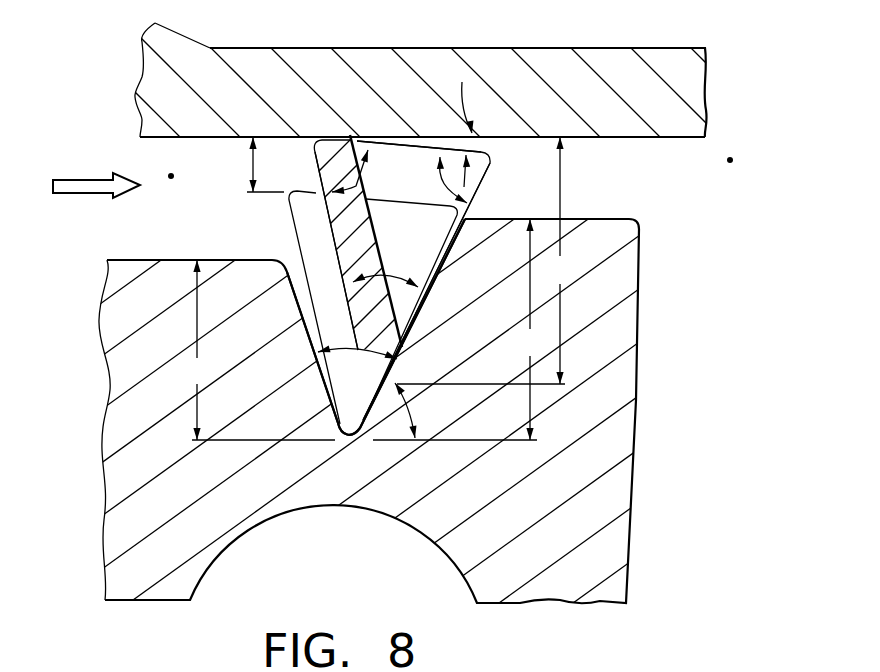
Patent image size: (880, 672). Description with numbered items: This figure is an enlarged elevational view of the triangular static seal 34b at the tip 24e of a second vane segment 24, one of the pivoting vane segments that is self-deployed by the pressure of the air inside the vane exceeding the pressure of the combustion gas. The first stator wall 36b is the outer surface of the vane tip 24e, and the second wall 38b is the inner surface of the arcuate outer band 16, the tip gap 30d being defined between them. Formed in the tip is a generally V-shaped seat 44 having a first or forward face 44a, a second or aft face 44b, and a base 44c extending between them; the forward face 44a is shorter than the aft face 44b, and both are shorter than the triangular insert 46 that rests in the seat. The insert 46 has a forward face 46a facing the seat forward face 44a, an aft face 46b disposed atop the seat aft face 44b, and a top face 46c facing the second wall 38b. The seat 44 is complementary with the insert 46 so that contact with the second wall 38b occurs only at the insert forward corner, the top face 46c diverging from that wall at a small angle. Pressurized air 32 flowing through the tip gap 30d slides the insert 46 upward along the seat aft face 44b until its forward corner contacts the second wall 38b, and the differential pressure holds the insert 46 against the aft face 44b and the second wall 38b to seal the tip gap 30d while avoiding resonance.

The outer band 16 is at (592, 47).
The second vane segment 24 is at (631, 545).
The tip 24e is at (640, 220).
The tip gap 30d is at (617, 185).
The pressurized air 32 is at (82, 194).
The triangular static seal 34b is at (162, 338).
The first stator wall 36b is at (588, 218).
The second wall 38b is at (612, 139).
The seat 44 is at (323, 292).
The seat forward face 44a is at (306, 320).
The seat aft face 44b is at (415, 315).
The base 44c is at (339, 425).
The triangular insert 46 is at (418, 231).
The forward face 46a is at (327, 211).
The aft face 46b is at (476, 196).
The top face 46c is at (428, 133).